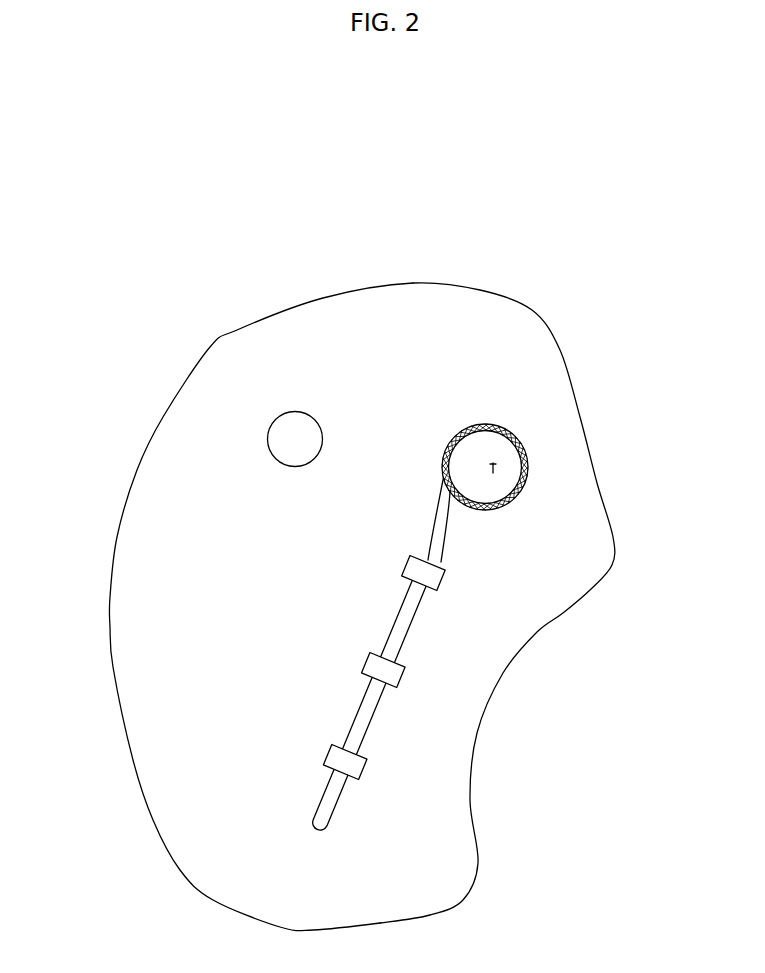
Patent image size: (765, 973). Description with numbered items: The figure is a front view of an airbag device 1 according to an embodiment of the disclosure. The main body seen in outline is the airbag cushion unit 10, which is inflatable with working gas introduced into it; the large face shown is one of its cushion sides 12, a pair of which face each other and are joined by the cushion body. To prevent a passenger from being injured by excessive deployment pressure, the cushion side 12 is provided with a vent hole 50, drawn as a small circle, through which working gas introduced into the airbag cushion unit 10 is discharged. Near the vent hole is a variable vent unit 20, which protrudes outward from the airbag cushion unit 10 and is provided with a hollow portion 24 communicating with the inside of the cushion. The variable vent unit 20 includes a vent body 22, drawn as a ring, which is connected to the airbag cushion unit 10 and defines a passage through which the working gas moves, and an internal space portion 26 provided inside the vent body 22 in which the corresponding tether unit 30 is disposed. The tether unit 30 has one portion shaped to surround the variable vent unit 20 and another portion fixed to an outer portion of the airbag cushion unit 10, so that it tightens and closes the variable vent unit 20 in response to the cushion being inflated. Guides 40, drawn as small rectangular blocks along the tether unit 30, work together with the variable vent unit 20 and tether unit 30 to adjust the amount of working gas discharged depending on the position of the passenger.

The airbag device 1 is at (347, 224).
The airbag cushion unit 10 is at (208, 343).
The cushion side 12 is at (165, 487).
The variable vent unit 20 is at (533, 443).
The vent body 22 is at (492, 425).
The hollow portion 24 is at (496, 468).
The internal space portion 26 is at (467, 512).
The tether unit 30 is at (407, 620).
The guide 40 is at (403, 672).
The vent hole 50 is at (297, 411).